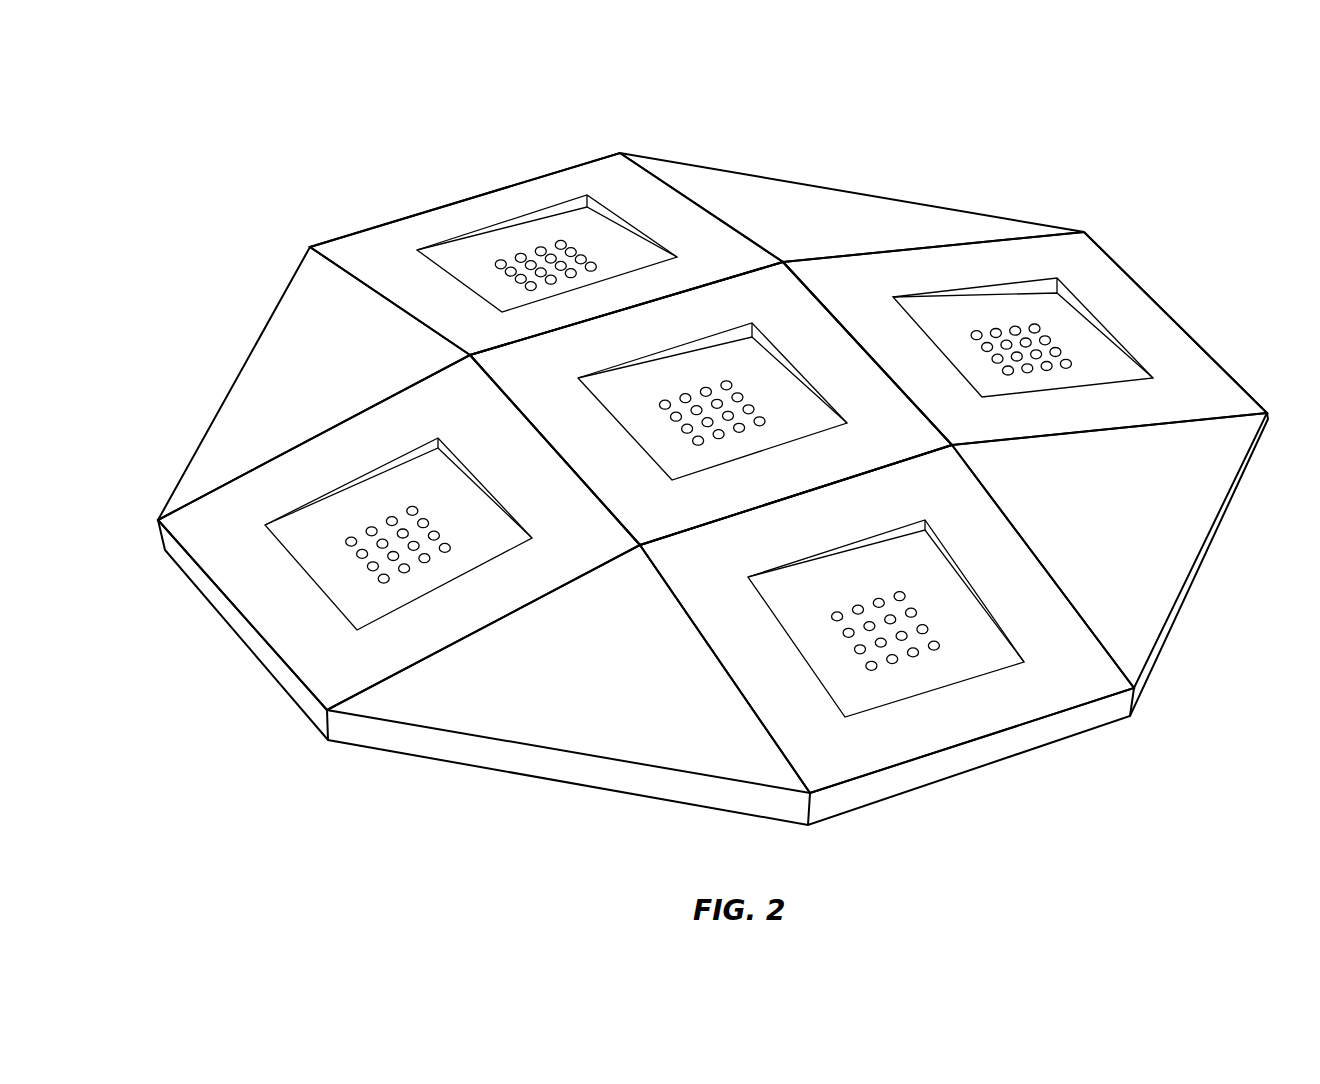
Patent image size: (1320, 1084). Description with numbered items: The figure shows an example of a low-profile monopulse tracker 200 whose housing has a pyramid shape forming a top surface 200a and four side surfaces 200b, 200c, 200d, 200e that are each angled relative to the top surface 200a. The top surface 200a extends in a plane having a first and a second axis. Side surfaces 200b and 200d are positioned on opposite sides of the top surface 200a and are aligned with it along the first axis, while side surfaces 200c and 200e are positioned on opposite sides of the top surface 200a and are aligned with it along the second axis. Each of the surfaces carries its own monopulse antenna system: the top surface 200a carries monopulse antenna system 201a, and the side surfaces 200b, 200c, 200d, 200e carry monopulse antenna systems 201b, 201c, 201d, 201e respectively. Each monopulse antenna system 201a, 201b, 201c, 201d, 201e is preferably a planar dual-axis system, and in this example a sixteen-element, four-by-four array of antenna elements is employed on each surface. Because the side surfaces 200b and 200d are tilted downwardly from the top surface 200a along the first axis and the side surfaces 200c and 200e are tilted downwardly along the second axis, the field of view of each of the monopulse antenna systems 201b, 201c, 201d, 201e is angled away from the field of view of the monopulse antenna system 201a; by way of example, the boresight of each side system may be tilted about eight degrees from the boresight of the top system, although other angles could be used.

The low-profile monopulse tracker 200 is at (216, 144).
The top surface 200a is at (765, 295).
The side surface 200b is at (880, 748).
The side surface 200c is at (1097, 242).
The side surface 200d is at (582, 162).
The side surface 200e is at (225, 522).
The monopulse antenna system 201a is at (641, 391).
The monopulse antenna system 201b is at (961, 668).
The monopulse antenna system 201c is at (1098, 348).
The monopulse antenna system 201d is at (514, 232).
The monopulse antenna system 201e is at (350, 578).